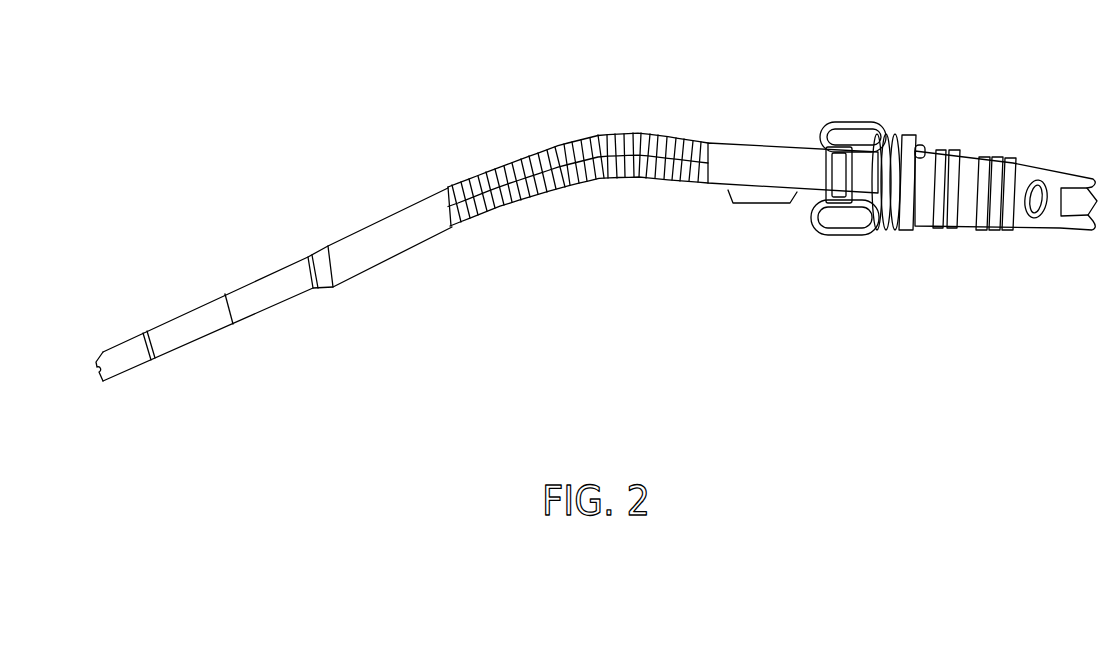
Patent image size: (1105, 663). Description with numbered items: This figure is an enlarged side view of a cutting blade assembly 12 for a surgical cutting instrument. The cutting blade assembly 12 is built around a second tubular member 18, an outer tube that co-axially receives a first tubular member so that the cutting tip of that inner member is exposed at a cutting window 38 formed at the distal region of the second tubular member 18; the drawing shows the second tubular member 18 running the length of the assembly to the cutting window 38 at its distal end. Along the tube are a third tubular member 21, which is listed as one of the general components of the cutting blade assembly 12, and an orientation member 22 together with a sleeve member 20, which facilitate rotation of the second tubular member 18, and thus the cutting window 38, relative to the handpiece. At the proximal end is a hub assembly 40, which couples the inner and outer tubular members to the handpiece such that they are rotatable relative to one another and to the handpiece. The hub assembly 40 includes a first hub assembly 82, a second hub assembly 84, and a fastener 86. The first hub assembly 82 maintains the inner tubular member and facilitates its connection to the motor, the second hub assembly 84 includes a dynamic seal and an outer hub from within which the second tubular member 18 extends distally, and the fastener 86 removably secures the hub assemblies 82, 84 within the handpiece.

The cutting blade assembly 12 is at (392, 78).
The second tubular member 18 is at (200, 295).
The cutting window 38 is at (93, 350).
The third tubular member 21 is at (566, 135).
The orientation member 22 is at (763, 140).
The sleeve member 20 is at (834, 176).
The hub assembly 40 is at (971, 89).
The fastener 86 is at (847, 250).
The second hub assembly 84 is at (929, 248).
The first hub assembly 82 is at (1025, 240).